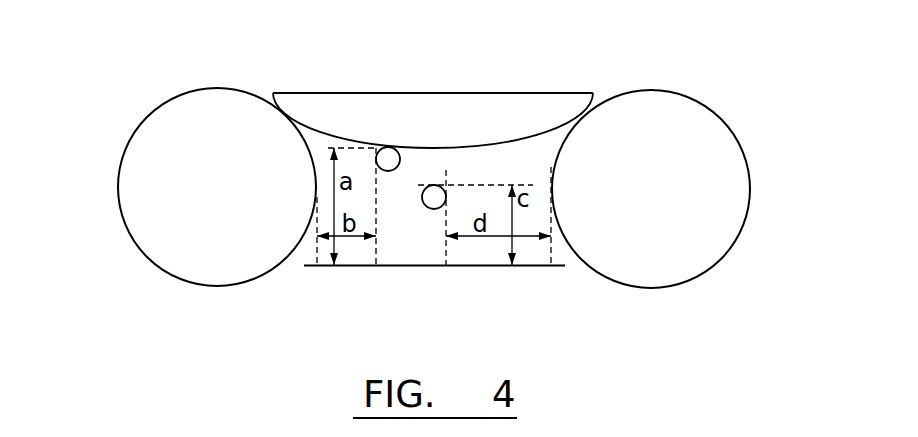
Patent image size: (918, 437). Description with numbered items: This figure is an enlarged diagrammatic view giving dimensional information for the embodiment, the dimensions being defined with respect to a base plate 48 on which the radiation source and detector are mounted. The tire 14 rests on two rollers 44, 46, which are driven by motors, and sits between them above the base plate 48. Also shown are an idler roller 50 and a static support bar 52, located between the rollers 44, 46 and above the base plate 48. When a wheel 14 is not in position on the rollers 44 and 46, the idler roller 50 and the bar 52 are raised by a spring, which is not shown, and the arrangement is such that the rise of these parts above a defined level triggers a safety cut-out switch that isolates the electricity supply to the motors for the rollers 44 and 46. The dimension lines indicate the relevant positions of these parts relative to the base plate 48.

The tire 14 is at (503, 103).
The roller 44 is at (730, 128).
The roller 46 is at (135, 130).
The base plate 48 is at (477, 267).
The idler roller 50 is at (388, 159).
The static support bar 52 is at (434, 197).